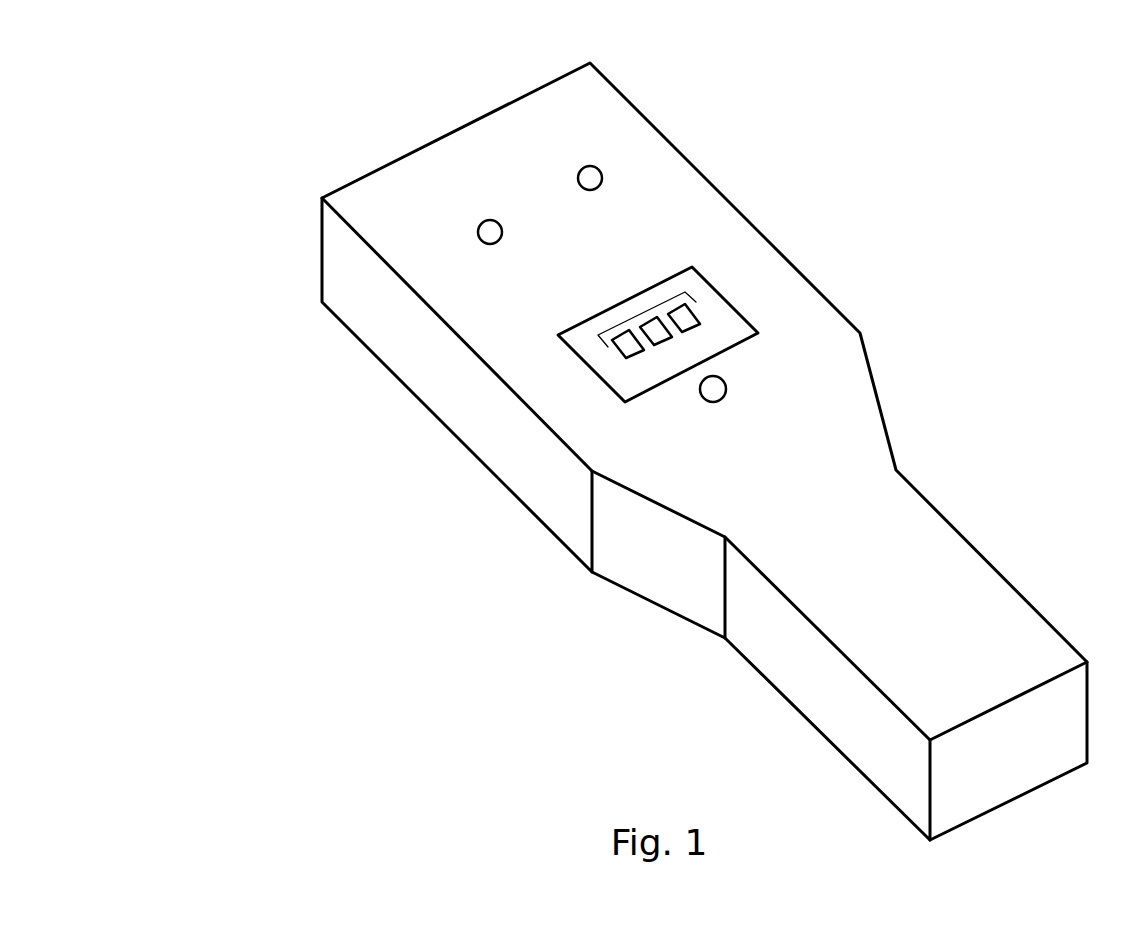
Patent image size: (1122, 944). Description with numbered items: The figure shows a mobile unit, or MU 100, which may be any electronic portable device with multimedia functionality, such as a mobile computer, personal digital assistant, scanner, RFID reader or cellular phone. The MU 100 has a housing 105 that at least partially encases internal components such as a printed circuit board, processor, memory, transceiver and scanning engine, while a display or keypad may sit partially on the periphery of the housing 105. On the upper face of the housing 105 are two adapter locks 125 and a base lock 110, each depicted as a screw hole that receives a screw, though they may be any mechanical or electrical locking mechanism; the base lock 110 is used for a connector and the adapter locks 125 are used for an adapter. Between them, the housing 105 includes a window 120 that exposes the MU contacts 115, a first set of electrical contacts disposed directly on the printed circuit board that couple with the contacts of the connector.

The MU 100 is at (646, 451).
The housing 105 is at (322, 251).
The base lock 110 is at (713, 389).
The MU contacts 115 is at (642, 313).
The window 120 is at (725, 335).
The adapter locks 125 is at (490, 232).